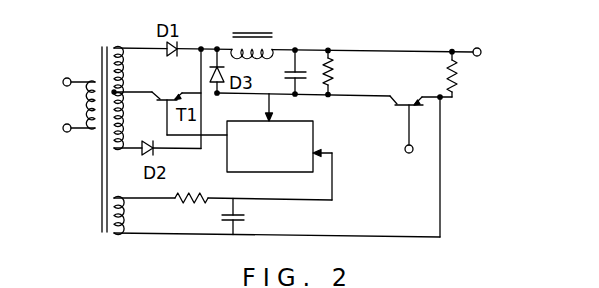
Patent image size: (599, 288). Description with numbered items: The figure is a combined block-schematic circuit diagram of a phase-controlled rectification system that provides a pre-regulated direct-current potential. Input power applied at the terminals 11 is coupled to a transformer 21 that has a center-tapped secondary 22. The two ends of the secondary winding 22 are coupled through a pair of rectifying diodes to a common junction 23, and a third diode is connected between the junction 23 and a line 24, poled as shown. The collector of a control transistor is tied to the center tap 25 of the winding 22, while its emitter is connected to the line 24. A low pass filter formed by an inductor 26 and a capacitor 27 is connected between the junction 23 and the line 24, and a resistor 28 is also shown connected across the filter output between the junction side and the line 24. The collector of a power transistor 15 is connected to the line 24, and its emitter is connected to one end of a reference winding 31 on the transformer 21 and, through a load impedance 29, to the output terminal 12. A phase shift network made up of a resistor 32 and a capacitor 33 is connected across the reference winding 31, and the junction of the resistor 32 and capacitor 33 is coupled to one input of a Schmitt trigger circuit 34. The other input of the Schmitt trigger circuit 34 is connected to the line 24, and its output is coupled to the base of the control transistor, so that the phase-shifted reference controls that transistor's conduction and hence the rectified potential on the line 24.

The terminals 11 is at (60, 121).
The terminal 12 is at (489, 30).
The power transistor 15 is at (417, 96).
The transformer 21 is at (96, 135).
The center-tapped secondary 22 is at (124, 112).
The junction 23 is at (200, 52).
The line 24 is at (252, 97).
The center tap 25 is at (116, 92).
The inductor 26 is at (274, 42).
The capacitor 27 is at (283, 76).
The resistor 28 is at (336, 76).
The load impedance 29 is at (458, 83).
The reference winding 31 is at (114, 235).
The resistor 32 is at (201, 207).
The capacitor 33 is at (243, 223).
The Schmitt trigger circuit 34 is at (313, 143).